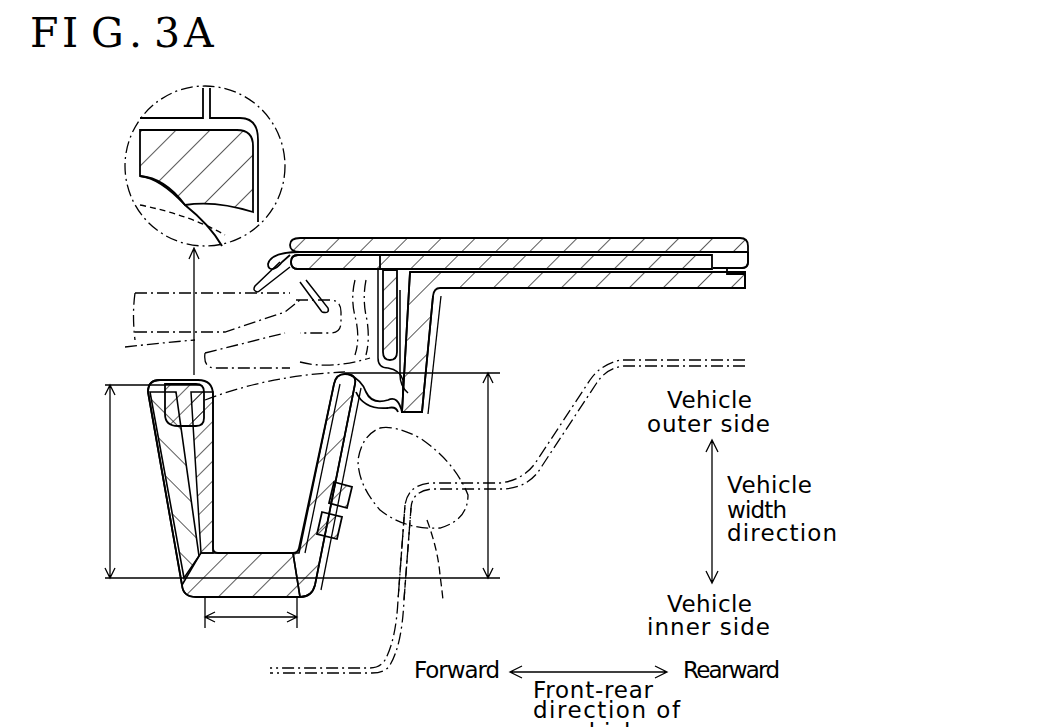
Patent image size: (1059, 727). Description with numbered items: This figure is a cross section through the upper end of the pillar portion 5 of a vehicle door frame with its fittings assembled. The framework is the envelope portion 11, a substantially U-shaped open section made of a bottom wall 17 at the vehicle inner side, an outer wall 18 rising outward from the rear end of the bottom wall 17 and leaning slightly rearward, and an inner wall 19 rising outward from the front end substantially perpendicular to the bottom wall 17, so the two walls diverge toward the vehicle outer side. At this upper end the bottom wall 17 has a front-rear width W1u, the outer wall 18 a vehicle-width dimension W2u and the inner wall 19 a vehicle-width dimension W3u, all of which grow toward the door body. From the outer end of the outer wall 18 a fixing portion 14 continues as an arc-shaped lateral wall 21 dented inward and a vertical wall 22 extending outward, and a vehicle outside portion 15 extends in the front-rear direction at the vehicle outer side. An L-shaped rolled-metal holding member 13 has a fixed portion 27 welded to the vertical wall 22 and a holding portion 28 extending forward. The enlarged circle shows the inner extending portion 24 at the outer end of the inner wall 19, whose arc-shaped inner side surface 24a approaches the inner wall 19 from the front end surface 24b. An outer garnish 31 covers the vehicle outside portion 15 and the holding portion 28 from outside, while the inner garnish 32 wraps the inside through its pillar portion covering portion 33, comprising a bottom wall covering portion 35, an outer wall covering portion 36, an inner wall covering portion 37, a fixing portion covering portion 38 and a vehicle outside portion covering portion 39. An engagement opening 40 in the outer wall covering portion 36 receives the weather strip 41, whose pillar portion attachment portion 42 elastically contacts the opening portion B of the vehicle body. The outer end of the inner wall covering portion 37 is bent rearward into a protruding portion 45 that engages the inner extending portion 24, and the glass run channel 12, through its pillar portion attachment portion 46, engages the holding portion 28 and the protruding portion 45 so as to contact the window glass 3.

The window glass 3 is at (236, 442).
The pillar portion 5 is at (701, 171).
The envelope portion 11 is at (182, 575).
The glass run channel 12 is at (314, 296).
The holding member 13 is at (300, 246).
The fixing portion 14 is at (434, 270).
The vehicle outside portion 15 is at (622, 266).
The bottom wall 17 is at (242, 560).
The outer wall 18 is at (320, 448).
The inner wall 19 is at (210, 470).
The lateral wall 21 is at (414, 396).
The vertical wall 22 is at (415, 318).
The inner extending portion 24 is at (160, 418).
The inner side surface 24a is at (150, 205).
The front end surface 24b is at (140, 168).
The fixed portion 27 is at (393, 282).
The holding portion 28 is at (338, 250).
The outer garnish 31 is at (530, 244).
The inner garnish 32 is at (745, 260).
The pillar portion covering portion 33 is at (746, 290).
The bottom wall covering portion 35 is at (272, 595).
The outer wall covering portion 36 is at (320, 540).
The inner wall covering portion 37 is at (170, 520).
The fixing portion covering portion 38 is at (428, 350).
The vehicle outside portion covering portion 39 is at (548, 288).
The engagement opening 40 is at (350, 488).
The weather strip 41 is at (407, 554).
The pillar portion attachment portion 42 is at (433, 575).
The protruding portion 45 is at (162, 374).
The pillar portion attachment portion 46 is at (162, 345).
The opening portion B is at (575, 410).
The width of the bottom wall at the upper end portion W1u is at (245, 622).
The width of the outer wall at the upper end portion W2u is at (490, 515).
The width of the inner wall at the upper end portion W3u is at (105, 483).